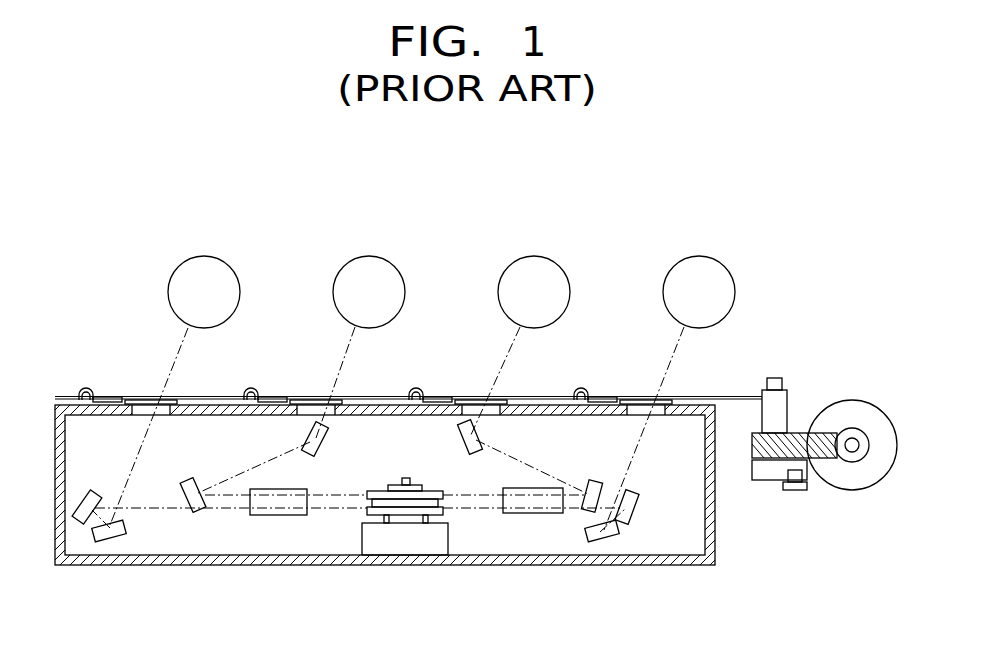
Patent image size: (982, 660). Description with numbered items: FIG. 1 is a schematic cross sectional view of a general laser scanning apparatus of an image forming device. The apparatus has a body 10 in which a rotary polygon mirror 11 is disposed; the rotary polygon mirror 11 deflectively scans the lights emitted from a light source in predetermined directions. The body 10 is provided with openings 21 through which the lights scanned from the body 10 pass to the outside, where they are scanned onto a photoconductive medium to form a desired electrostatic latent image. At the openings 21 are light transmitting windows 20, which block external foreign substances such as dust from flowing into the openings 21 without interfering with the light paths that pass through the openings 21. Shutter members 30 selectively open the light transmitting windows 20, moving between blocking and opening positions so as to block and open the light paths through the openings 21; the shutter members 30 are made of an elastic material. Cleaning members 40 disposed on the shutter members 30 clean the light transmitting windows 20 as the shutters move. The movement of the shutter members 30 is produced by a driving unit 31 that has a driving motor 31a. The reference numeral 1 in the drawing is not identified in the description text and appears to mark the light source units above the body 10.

The laser diode 1 is at (202, 262).
The body 10 is at (522, 565).
The rotary polygon mirror 11 is at (395, 515).
The light transmitting window 20 is at (180, 400).
The opening 21 is at (137, 397).
The shutter member 30 is at (147, 397).
The cleaning member 40 is at (160, 397).
The driving unit 31 is at (794, 357).
The driving motor 31a is at (852, 490).